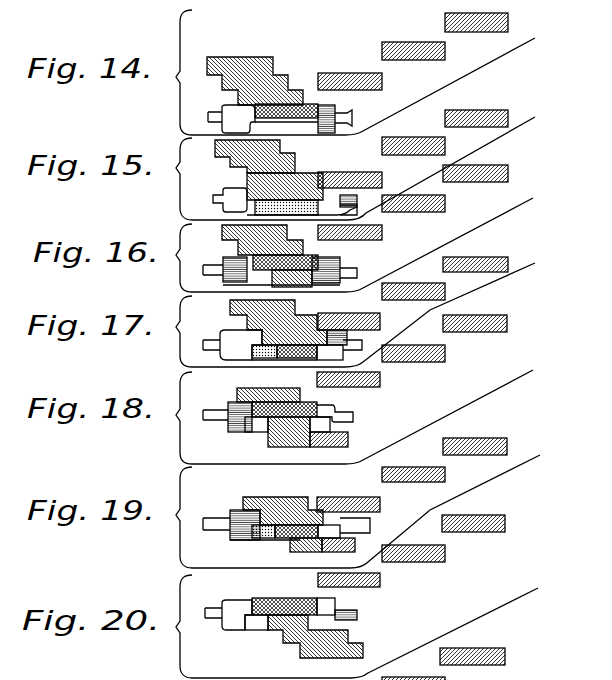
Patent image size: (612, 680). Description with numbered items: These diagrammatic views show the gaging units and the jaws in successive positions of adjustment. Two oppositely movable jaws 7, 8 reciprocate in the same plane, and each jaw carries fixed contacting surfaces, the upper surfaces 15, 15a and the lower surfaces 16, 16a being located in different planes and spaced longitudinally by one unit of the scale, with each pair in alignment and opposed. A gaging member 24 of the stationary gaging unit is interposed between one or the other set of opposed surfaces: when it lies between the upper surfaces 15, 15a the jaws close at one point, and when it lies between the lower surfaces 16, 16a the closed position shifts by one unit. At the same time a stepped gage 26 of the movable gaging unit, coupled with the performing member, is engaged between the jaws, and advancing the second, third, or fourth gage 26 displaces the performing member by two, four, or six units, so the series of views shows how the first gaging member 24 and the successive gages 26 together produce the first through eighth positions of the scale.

In FIG. 14, the jaw 7 is at (208, 117).
In FIG. 15, the jaw 7 is at (213, 200).
In FIG. 16, the jaw 7 is at (210, 278).
In FIG. 17, the jaw 7 is at (212, 344).
In FIG. 18, the jaw 7 is at (203, 415).
In FIG. 19, the jaw 7 is at (213, 528).
In FIG. 20, the jaw 7 is at (210, 619).
In FIG. 14, the jaw 8 is at (350, 118).
In FIG. 15, the jaw 8 is at (357, 210).
In FIG. 16, the jaw 8 is at (357, 272).
In FIG. 17, the jaw 8 is at (362, 345).
In FIG. 18, the jaw 8 is at (353, 414).
In FIG. 19, the jaw 8 is at (370, 523).
In FIG. 20, the jaw 8 is at (357, 614).
In FIG. 14, the contacting surface 15 is at (238, 117).
In FIG. 15, the contacting surface 15 is at (285, 186).
In FIG. 16, the contacting surface 15 is at (230, 258).
In FIG. 17, the contacting surface 15 is at (240, 330).
In FIG. 18, the contacting surface 15 is at (235, 403).
In FIG. 19, the contacting surface 15 is at (242, 510).
In FIG. 20, the contacting surface 15 is at (265, 598).
In FIG. 14, the contacting surface 15a is at (340, 107).
In FIG. 15, the contacting surface 15a is at (332, 178).
In FIG. 16, the contacting surface 15a is at (338, 259).
In FIG. 17, the contacting surface 15a is at (338, 330).
In FIG. 18, the contacting surface 15a is at (323, 407).
In FIG. 19, the contacting surface 15a is at (325, 508).
In FIG. 20, the contacting surface 15a is at (323, 604).
In FIG. 14, the contacting surface 16 is at (255, 123).
In FIG. 15, the contacting surface 16 is at (255, 212).
In FIG. 16, the contacting surface 16 is at (272, 276).
In FIG. 17, the contacting surface 16 is at (228, 357).
In FIG. 18, the contacting surface 16 is at (247, 432).
In FIG. 19, the contacting surface 16 is at (247, 540).
In FIG. 20, the contacting surface 16 is at (248, 630).
In FIG. 14, the contacting surface 16a is at (302, 133).
In FIG. 16, the contacting surface 16a is at (345, 283).
In FIG. 17, the contacting surface 16a is at (305, 358).
In FIG. 18, the contacting surface 16a is at (325, 447).
In FIG. 19, the contacting surface 16a is at (303, 552).
In FIG. 20, the contacting surface 16a is at (300, 643).
In FIG. 14, the gaging member 24 is at (358, 73).
In FIG. 15, the gaging member 24 is at (358, 173).
In FIG. 16, the gaging member 24 is at (318, 240).
In FIG. 17, the gaging member 24 is at (262, 358).
In FIG. 18, the gaging member 24 is at (263, 420).
In FIG. 19, the gaging member 24 is at (380, 503).
In FIG. 20, the gaging member 24 is at (298, 606).
In FIG. 14, the stepped gage 26 is at (308, 102).
In FIG. 15, the stepped gage 26 is at (217, 155).